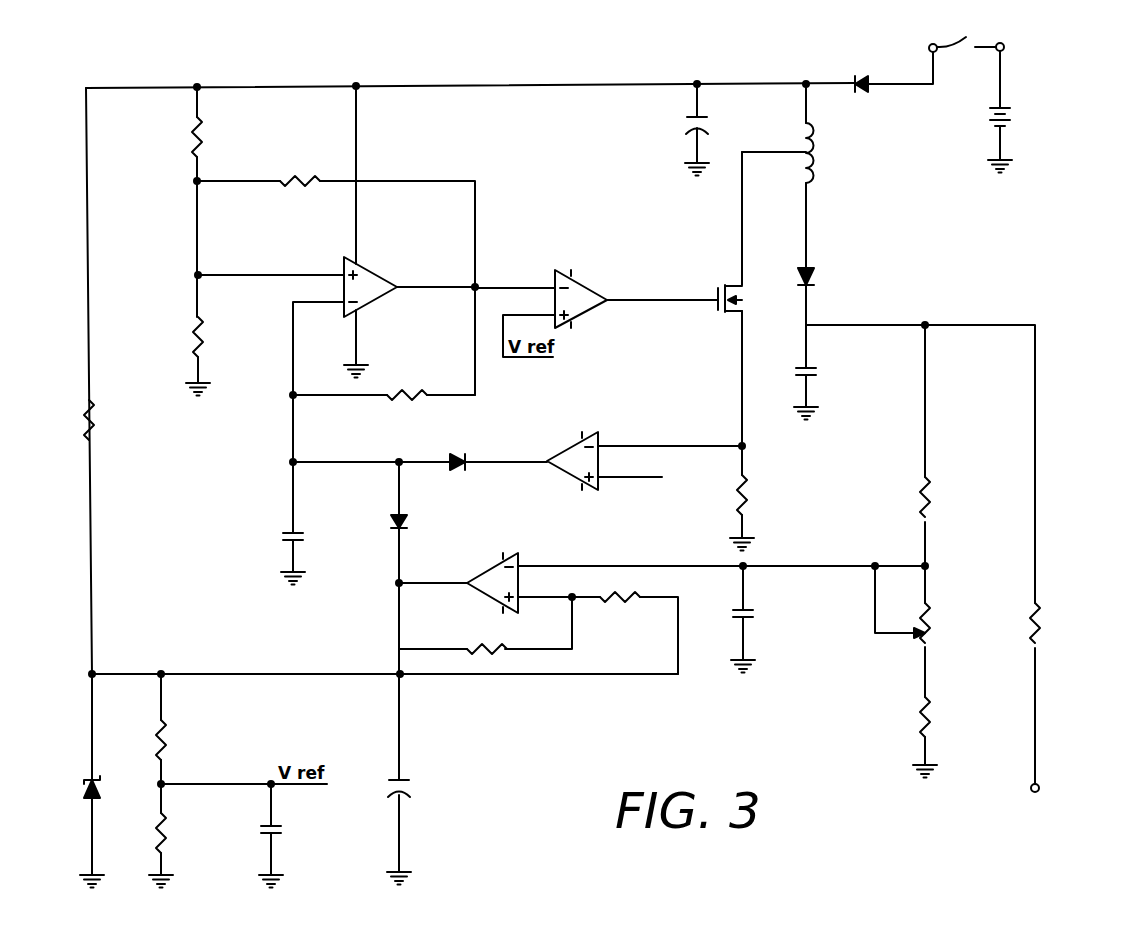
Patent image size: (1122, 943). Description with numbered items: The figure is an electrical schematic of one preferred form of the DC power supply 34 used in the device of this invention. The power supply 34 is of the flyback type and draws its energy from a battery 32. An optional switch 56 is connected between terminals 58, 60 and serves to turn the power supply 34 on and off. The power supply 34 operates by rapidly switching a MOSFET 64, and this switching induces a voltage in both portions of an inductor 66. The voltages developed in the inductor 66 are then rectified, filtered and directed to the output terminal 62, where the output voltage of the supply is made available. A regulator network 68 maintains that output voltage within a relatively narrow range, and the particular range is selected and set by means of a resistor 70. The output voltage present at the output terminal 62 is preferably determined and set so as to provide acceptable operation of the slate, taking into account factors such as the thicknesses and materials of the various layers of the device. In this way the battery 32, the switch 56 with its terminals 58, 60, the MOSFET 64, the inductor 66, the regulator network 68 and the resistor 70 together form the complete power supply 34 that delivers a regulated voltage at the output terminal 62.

The battery 32 is at (1012, 117).
The DC power supply 34 is at (617, 688).
The switch 56 is at (970, 68).
The terminal 58 is at (929, 47).
The terminal 60 is at (1004, 48).
The output terminal 62 is at (1031, 792).
The MOSFET 64 is at (738, 283).
The inductor 66 is at (811, 158).
The regulator network 68 is at (522, 494).
The resistor 70 is at (940, 600).